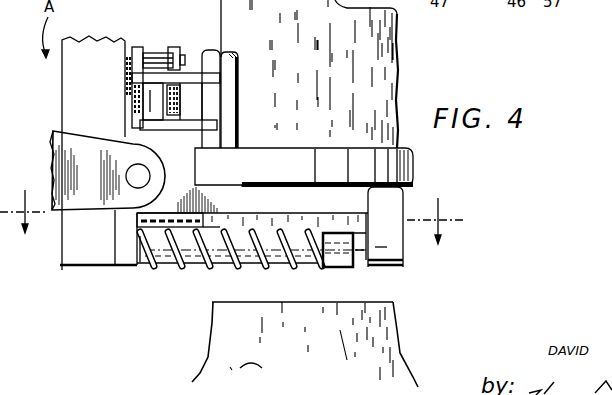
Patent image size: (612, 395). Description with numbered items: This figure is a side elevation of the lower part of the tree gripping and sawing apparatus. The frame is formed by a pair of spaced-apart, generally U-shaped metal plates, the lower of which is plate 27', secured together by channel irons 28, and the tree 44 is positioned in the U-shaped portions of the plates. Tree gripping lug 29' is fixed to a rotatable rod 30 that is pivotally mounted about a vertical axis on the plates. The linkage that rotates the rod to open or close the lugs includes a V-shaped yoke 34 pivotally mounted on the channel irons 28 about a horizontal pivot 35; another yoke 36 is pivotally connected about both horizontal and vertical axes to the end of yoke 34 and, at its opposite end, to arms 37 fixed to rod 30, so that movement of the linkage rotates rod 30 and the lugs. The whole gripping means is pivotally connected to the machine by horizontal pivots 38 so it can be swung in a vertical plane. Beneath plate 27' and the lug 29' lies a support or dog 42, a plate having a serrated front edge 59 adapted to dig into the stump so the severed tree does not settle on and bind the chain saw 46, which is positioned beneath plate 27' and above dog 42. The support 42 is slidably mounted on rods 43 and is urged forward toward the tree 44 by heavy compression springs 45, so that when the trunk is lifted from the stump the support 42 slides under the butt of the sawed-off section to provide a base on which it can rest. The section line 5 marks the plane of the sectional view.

The section line 5- 5 is at (231, 215).
The channel irons 28 is at (96, 46).
The horizontal pivots 38 is at (133, 173).
The yoke 36 is at (128, 98).
The horizontal pivot 35 is at (154, 60).
The V-shaped yoke 34 is at (173, 50).
The arms 37 is at (195, 125).
The rotatable rod 30 is at (217, 58).
The tree 44 is at (365, 62).
The U-shaped metal plate 27' is at (304, 170).
The tree gripping lug 29' is at (356, 168).
The serrated front edge 59 is at (357, 243).
The rods 43 is at (162, 250).
The compression springs 45 is at (207, 263).
The chain saw 46 is at (153, 261).
The support or dog 42 is at (330, 267).